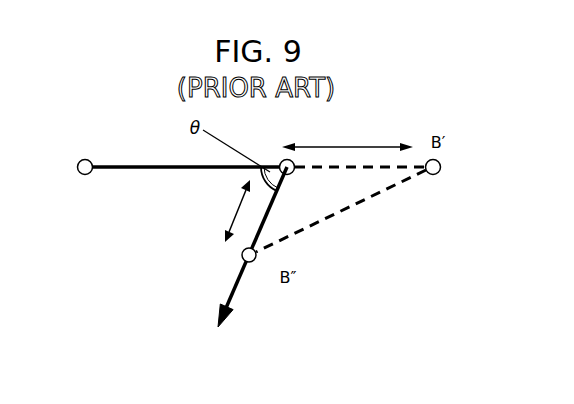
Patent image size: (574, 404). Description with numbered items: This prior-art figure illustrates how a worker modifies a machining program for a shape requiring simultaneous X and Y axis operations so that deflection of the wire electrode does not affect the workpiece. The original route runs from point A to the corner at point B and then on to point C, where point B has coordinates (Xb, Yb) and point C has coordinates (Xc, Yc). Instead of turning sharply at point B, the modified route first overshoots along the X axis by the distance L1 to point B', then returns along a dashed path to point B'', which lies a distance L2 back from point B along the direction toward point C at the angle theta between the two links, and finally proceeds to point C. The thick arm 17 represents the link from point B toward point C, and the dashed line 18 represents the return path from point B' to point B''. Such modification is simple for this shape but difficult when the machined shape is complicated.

The arm 17 is at (237, 277).
The virtual line 18 is at (342, 210).
The point A is at (90, 154).
The point B is at (276, 155).
The point C is at (219, 328).
The distance L1 is at (347, 133).
The distance L2 is at (228, 211).